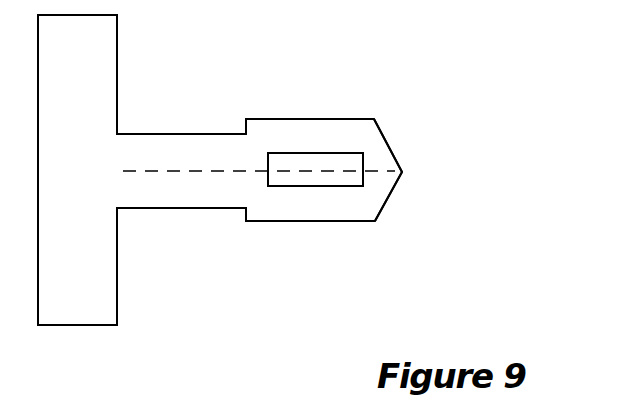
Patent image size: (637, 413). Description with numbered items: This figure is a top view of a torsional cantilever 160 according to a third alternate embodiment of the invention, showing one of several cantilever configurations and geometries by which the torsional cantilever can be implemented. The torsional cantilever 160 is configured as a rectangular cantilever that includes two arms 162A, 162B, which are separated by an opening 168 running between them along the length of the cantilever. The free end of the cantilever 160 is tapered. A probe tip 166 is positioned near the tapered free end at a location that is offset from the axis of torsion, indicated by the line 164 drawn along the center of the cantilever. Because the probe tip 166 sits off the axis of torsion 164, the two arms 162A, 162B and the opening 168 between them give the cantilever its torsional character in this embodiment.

The torsional cantilever 160 is at (445, 73).
The arm 162A is at (287, 131).
The arm 162B is at (353, 221).
The axis of torsion 164 is at (190, 170).
The probe tip 166 is at (376, 153).
The opening 168 is at (278, 182).